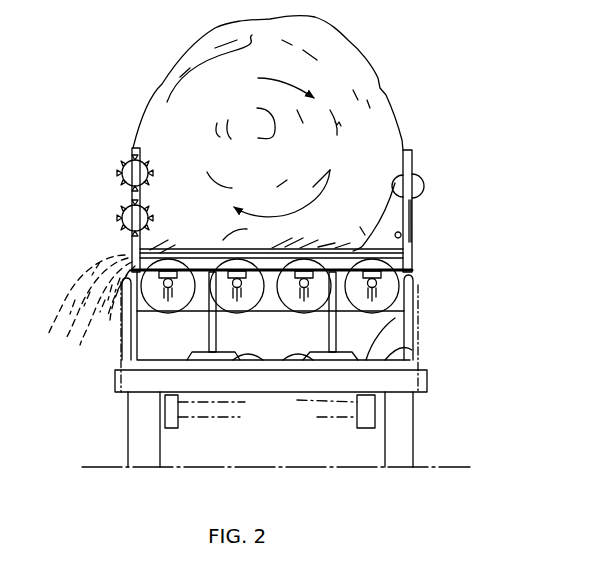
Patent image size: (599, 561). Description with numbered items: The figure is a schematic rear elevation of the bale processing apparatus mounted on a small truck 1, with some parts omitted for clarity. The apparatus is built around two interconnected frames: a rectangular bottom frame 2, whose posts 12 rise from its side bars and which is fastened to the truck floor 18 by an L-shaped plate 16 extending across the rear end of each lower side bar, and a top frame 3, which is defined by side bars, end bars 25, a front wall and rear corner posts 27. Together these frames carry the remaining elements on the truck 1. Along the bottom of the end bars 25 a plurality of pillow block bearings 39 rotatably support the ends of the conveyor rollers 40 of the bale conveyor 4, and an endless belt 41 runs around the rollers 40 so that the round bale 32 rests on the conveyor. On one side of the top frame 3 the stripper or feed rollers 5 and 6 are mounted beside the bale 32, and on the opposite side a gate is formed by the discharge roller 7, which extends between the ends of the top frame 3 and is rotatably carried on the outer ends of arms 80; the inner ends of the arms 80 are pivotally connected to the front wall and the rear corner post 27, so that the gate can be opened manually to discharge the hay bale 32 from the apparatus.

The truck 1 is at (128, 355).
The bottom frame 2 is at (452, 305).
The top frame 3 is at (455, 222).
The bale conveyor 4 is at (292, 305).
The stripper or feed roller 5 is at (120, 170).
The stripper or feed roller 6 is at (121, 218).
The discharge roller 7 is at (417, 180).
The posts 12 is at (209, 329).
The L-shaped plate 16 is at (303, 355).
The truck floor 18 is at (390, 363).
The end bars 25 is at (398, 264).
The rear corner posts 27 is at (131, 148).
The round bale 32 is at (340, 75).
The pillow block bearings 39 is at (150, 293).
The conveyor rollers 40 is at (238, 310).
The endless belt 41 is at (140, 313).
The arms 80 is at (413, 210).